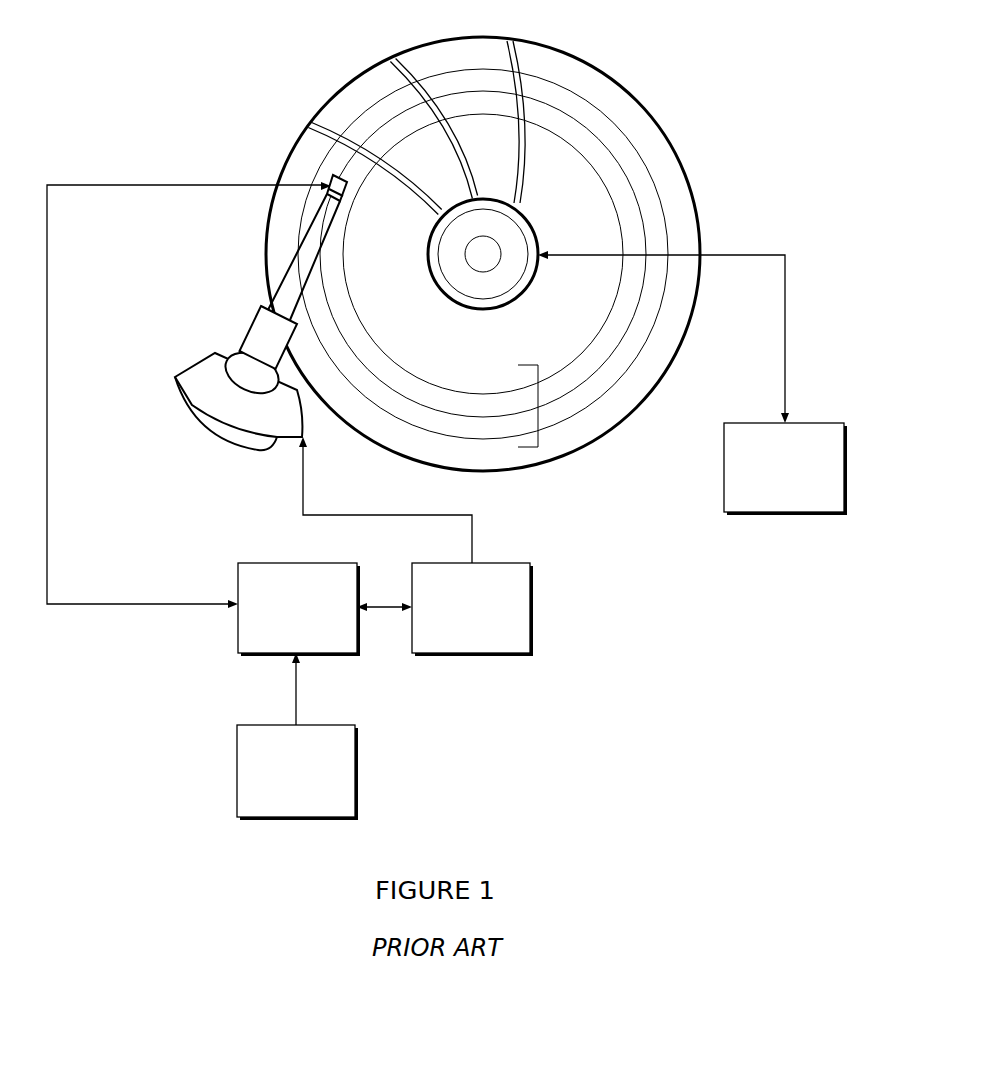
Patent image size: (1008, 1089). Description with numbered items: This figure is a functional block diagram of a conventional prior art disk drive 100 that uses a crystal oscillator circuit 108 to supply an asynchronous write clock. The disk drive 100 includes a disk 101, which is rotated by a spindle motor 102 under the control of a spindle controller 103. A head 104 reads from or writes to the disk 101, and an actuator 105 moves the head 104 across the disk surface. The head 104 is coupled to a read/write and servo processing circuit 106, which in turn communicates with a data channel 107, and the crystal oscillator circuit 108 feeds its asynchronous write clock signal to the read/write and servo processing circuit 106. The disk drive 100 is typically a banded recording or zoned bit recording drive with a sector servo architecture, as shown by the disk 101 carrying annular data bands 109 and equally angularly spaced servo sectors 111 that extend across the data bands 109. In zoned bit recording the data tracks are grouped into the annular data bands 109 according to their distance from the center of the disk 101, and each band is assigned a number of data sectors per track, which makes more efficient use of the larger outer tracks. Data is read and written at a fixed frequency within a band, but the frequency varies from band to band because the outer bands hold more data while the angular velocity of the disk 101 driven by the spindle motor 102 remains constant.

The disk drive 100 is at (190, 82).
The disk 101 is at (363, 72).
The spindle motor 102 is at (522, 230).
The spindle controller 103 is at (825, 422).
The head 104 is at (312, 183).
The actuator 105 is at (250, 330).
The read/write and servo processing circuit 106 is at (336, 563).
The data channel 107 is at (512, 563).
The crystal oscillator circuit 108 is at (362, 758).
The annular data bands 109 is at (538, 410).
The servo sectors 111 is at (338, 128).